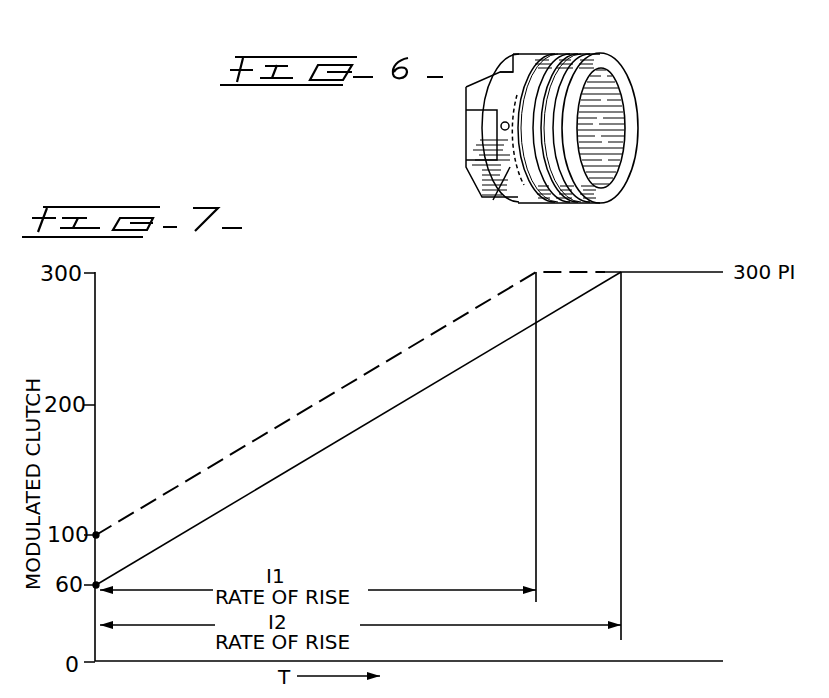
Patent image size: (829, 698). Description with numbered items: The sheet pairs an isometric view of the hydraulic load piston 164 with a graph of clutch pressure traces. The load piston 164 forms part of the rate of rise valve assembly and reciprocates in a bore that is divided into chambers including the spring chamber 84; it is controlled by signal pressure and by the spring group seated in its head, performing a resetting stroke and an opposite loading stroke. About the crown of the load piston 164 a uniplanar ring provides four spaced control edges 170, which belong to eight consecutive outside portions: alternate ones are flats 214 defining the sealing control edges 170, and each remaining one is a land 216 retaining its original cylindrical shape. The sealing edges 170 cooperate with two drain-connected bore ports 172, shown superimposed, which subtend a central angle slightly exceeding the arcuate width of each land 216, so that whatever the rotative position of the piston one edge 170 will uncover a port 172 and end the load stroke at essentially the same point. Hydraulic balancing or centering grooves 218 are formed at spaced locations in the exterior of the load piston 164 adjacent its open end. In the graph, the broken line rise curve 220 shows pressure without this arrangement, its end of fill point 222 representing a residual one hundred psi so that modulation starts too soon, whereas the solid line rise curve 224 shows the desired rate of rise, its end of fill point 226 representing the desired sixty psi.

In FIG. 6, the spring chamber 84 is at (607, 137).
In FIG. 6, the load piston 164 is at (573, 60).
In FIG. 6, the control edges 170 is at (507, 68).
In FIG. 6, the bore ports 172 is at (528, 200).
In FIG. 6, the flats 214 is at (466, 152).
In FIG. 6, the land 216 is at (476, 93).
In FIG. 6, the balancing or centering grooves 218 is at (547, 203).
In FIG. 7, the broken line rise curve 220 is at (340, 389).
In FIG. 7, the end of fill point 222 is at (98, 535).
In FIG. 7, the solid line rise curve 224 is at (363, 425).
In FIG. 7, the end of fill point 226 is at (100, 580).